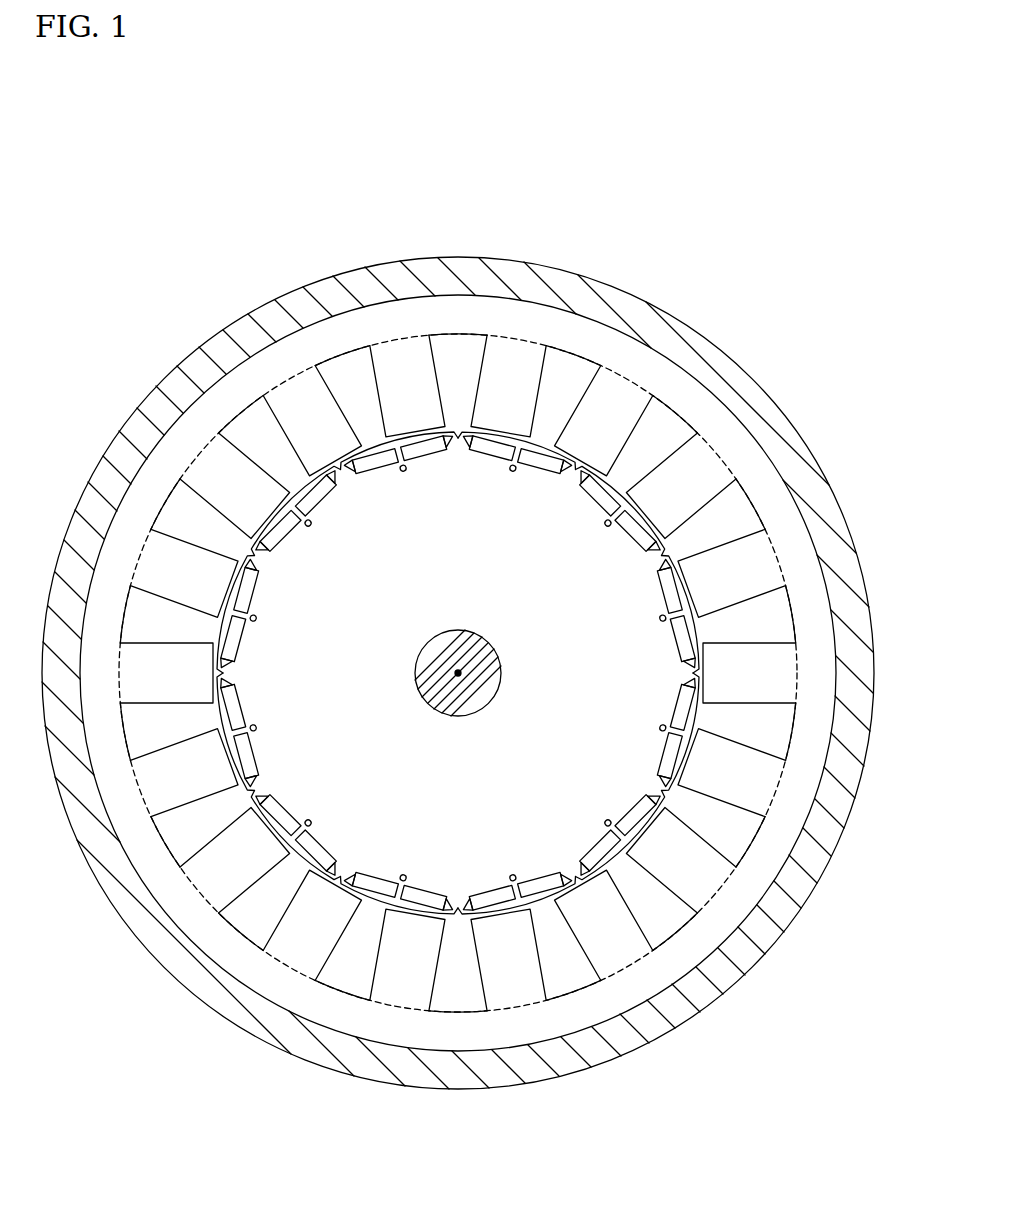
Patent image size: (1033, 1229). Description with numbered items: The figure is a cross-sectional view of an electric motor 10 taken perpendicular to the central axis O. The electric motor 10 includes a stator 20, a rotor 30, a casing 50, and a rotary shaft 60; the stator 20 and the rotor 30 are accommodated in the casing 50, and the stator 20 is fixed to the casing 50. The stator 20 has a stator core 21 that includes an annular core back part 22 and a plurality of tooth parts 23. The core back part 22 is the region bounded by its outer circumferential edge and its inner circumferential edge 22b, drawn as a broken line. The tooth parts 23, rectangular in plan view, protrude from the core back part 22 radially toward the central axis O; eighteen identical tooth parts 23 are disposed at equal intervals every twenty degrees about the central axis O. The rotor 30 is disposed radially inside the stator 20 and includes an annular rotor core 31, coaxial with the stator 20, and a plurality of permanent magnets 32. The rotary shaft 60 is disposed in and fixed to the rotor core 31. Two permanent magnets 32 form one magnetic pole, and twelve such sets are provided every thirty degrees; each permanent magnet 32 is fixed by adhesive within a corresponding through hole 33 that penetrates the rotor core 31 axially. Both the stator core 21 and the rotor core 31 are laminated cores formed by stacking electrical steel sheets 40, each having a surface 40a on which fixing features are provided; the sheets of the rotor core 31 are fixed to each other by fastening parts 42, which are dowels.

The electric motor 10 is at (762, 159).
The stator 20 is at (742, 417).
The stator core 21 is at (558, 215).
The core back part 22 is at (650, 358).
The inner circumferential edge 22b is at (393, 336).
The tooth part 23 is at (597, 390).
The rotor 30 is at (280, 668).
The rotor core 31 is at (362, 860).
The permanent magnet 32 is at (530, 462).
The through hole 33 is at (488, 895).
The electrical steel sheet 40 is at (242, 386).
The surface 40a is at (298, 352).
The fastening part 42 is at (313, 524).
The casing 50 is at (806, 460).
The rotary shaft 60 is at (497, 690).
The central axis O is at (461, 671).